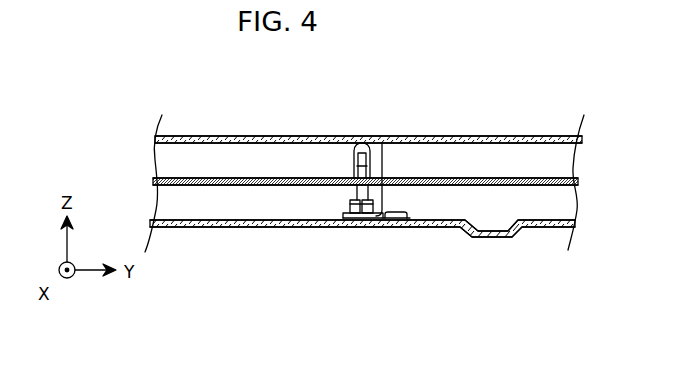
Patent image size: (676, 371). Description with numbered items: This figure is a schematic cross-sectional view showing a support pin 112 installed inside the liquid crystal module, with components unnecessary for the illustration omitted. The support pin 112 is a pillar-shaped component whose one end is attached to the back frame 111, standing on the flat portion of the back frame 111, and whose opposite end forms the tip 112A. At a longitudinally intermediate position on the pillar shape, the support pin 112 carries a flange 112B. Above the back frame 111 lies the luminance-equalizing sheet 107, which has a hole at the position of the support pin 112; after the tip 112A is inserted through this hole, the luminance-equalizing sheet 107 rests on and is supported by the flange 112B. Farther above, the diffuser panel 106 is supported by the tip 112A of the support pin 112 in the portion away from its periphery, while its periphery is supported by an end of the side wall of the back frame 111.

The diffuser panel 106 is at (248, 137).
The luminance-equalizing sheet 107 is at (518, 179).
The back frame 111 is at (238, 223).
The support pin 112 is at (353, 175).
The tip 112A is at (365, 143).
The flange 112B is at (383, 192).